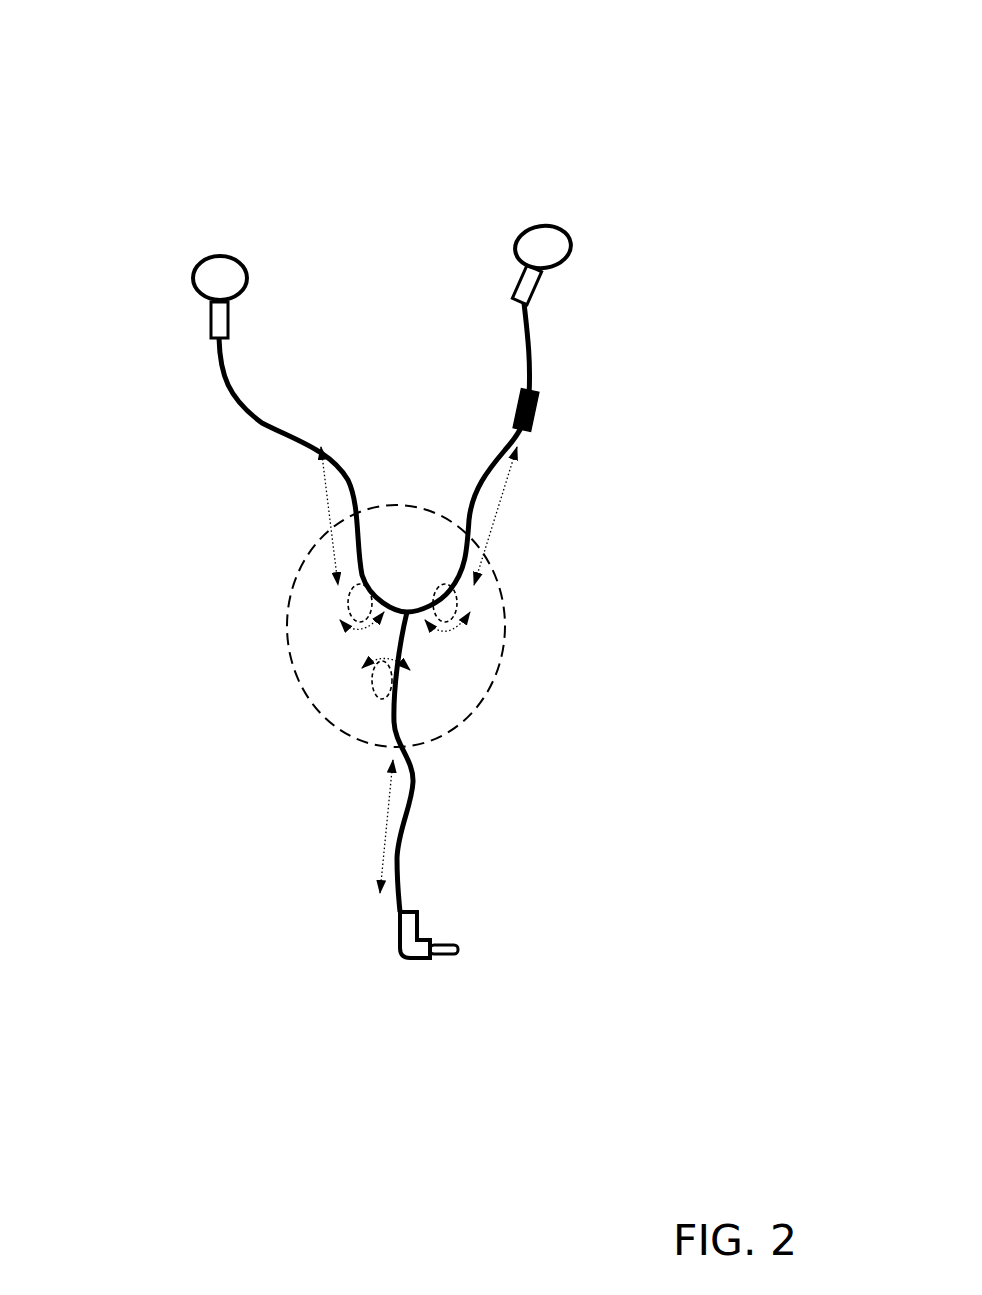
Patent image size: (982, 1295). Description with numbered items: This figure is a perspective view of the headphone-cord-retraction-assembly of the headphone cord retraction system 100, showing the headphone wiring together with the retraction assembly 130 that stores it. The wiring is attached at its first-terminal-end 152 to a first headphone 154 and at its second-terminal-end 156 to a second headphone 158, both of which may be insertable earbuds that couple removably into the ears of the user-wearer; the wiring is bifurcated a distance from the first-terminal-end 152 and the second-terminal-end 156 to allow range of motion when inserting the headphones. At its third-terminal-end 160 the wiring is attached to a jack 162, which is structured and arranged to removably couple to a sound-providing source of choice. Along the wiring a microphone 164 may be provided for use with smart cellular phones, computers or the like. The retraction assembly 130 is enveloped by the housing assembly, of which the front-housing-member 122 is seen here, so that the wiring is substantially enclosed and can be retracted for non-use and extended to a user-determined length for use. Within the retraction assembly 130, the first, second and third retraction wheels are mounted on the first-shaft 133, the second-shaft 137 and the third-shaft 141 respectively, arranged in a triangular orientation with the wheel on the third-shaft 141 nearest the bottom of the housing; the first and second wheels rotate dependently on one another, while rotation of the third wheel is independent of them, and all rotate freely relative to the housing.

The headphone cord retraction system 100 is at (735, 105).
The first headphone 154 is at (221, 286).
The first-terminal-end 152 is at (212, 340).
The second headphone 158 is at (549, 246).
The second-terminal-end 156 is at (530, 308).
The microphone 164 is at (540, 418).
The front-housing-member 122 is at (497, 693).
The second-shaft 137 is at (344, 606).
The first-shaft 133 is at (458, 601).
The retraction assembly 130 is at (462, 648).
The third-shaft 141 is at (402, 762).
The third-terminal-end 160 is at (397, 912).
The jack 162 is at (464, 952).